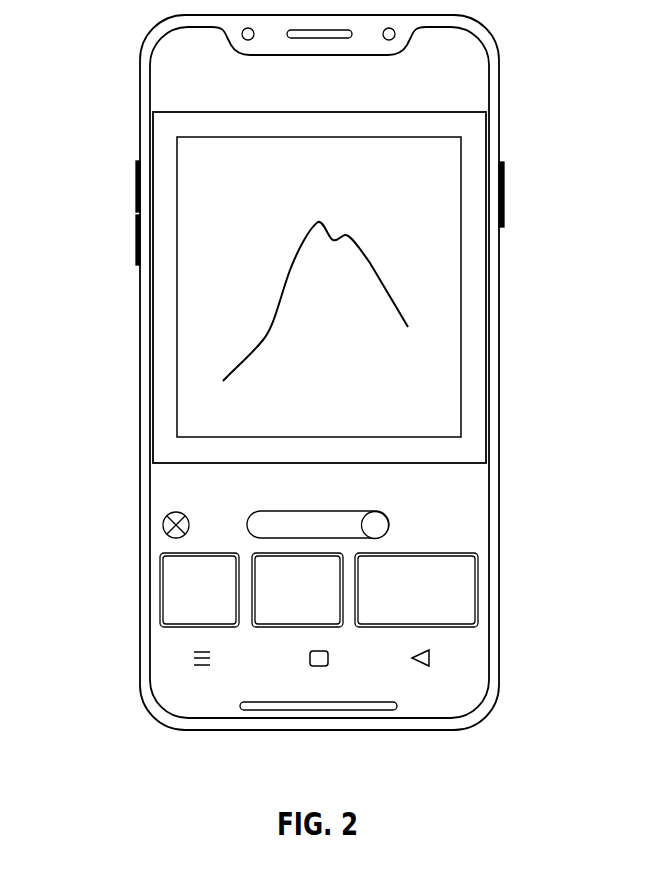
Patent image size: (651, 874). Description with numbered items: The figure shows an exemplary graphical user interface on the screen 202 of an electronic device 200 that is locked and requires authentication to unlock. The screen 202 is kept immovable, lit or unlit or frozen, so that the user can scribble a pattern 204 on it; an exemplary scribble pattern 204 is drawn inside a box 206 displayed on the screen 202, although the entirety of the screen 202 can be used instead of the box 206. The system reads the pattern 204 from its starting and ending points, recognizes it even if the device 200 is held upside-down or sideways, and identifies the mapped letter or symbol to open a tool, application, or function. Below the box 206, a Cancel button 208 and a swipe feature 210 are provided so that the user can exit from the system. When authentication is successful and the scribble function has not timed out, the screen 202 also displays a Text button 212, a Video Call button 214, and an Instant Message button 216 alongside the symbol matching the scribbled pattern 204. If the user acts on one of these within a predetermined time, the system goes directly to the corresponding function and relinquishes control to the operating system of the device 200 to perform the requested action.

The device 200 is at (140, 127).
The screen 202 is at (197, 268).
The scribble pattern 204 is at (375, 267).
The box 206 is at (461, 317).
The Cancel button 208 is at (161, 525).
The swipe feature 210 is at (389, 525).
The Text button 212 is at (160, 590).
The Video Call button 214 is at (262, 627).
The Instant Message button 216 is at (478, 588).